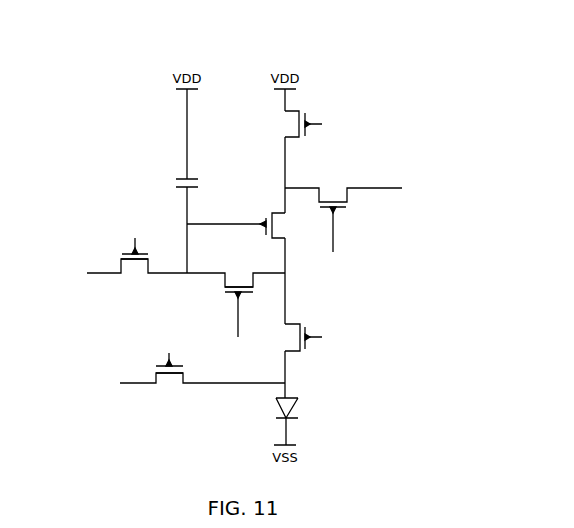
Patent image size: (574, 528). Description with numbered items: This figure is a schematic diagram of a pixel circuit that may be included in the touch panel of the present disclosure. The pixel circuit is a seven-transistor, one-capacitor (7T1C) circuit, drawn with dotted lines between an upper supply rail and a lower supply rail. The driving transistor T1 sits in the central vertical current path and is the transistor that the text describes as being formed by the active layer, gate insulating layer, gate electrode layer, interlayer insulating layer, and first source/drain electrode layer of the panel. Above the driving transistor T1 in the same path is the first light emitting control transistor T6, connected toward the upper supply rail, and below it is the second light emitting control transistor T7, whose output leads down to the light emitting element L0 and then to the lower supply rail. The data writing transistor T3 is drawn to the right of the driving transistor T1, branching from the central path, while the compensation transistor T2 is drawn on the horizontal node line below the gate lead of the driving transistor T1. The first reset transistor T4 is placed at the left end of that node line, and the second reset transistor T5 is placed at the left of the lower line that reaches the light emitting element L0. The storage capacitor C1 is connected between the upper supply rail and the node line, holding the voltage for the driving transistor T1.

The driving transistor T1 is at (236, 214).
The compensation transistor T2 is at (224, 312).
The data writing transistor T3 is at (343, 220).
The first reset transistor T4 is at (119, 248).
The second reset transistor T5 is at (153, 362).
The first light emitting control transistor T6 is at (308, 114).
The second light emitting control transistor T7 is at (307, 349).
The storage capacitor C1 is at (199, 193).
The light emitting element L0 is at (300, 410).